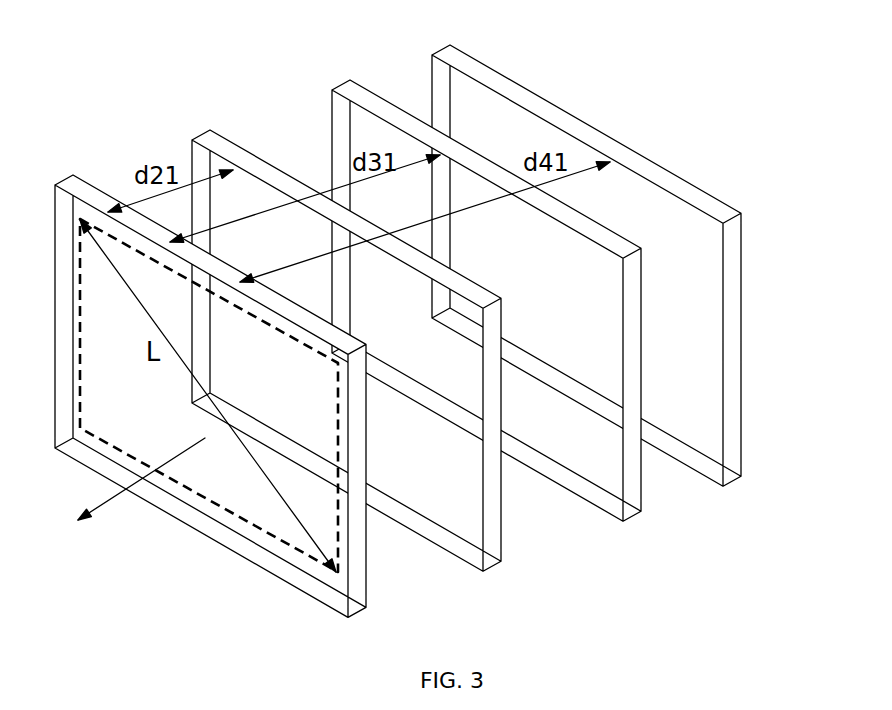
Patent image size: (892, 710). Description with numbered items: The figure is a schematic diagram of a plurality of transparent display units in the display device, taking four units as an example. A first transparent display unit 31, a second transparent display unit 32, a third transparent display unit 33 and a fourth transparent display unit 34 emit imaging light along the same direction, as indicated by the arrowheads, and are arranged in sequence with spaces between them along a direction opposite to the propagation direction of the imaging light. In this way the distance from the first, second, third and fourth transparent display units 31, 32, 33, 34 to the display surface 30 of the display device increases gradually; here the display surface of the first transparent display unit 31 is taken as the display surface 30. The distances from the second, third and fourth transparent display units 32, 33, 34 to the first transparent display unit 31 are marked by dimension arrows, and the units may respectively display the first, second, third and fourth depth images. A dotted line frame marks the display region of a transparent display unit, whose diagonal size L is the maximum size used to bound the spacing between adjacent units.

The display surface 30 is at (215, 532).
The first transparent display unit 31 is at (365, 618).
The second transparent display unit 32 is at (502, 577).
The third transparent display unit 33 is at (640, 532).
The fourth transparent display unit 34 is at (742, 492).